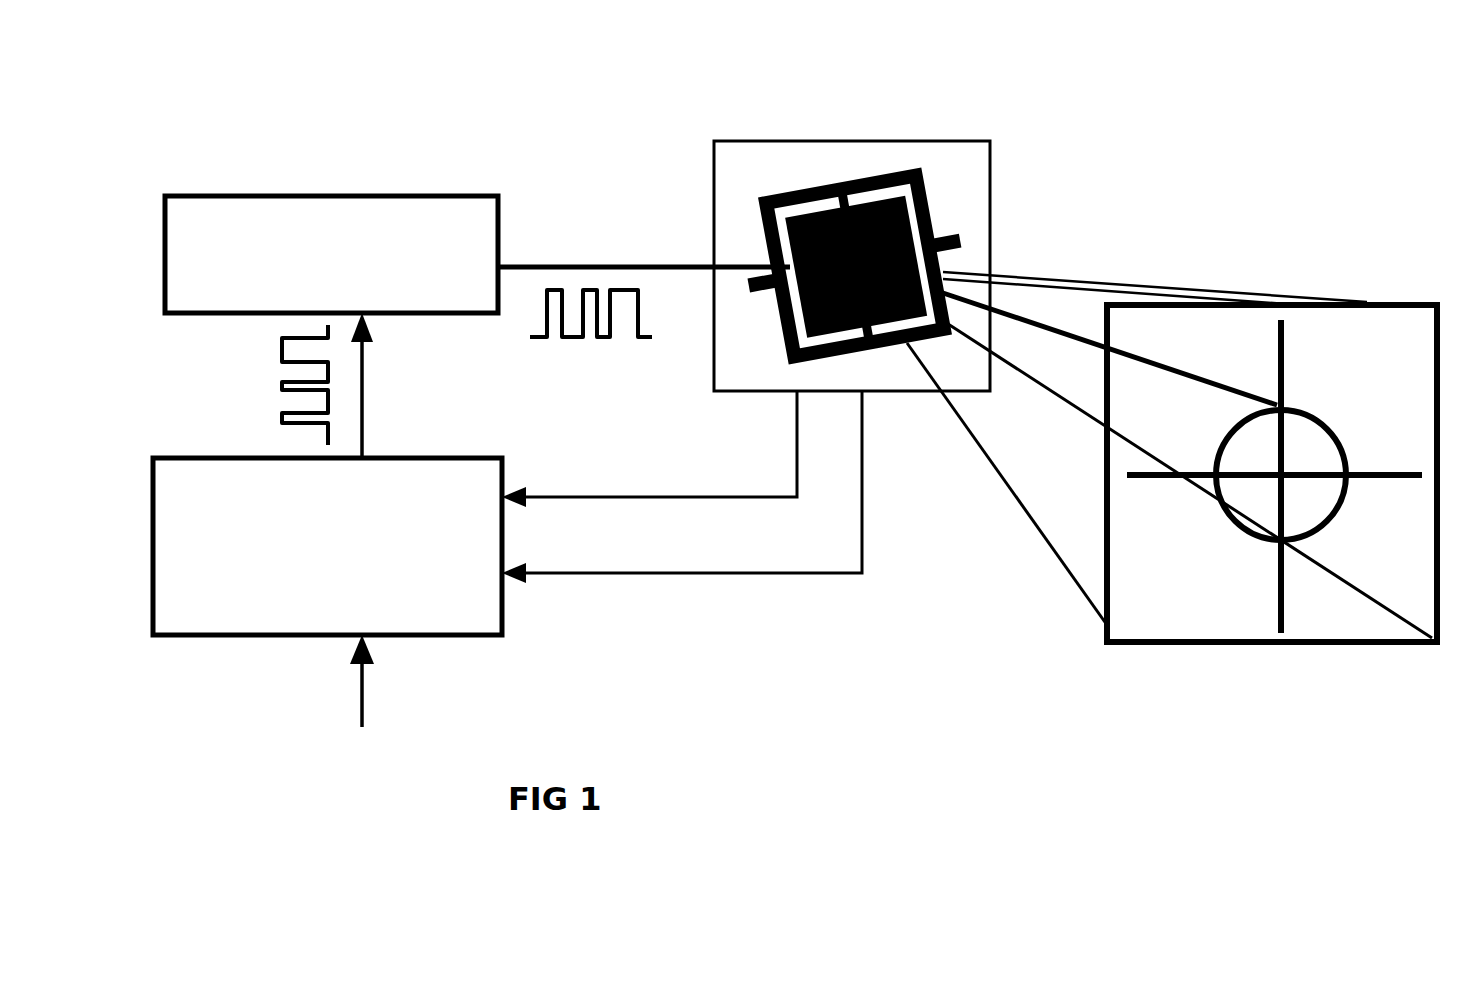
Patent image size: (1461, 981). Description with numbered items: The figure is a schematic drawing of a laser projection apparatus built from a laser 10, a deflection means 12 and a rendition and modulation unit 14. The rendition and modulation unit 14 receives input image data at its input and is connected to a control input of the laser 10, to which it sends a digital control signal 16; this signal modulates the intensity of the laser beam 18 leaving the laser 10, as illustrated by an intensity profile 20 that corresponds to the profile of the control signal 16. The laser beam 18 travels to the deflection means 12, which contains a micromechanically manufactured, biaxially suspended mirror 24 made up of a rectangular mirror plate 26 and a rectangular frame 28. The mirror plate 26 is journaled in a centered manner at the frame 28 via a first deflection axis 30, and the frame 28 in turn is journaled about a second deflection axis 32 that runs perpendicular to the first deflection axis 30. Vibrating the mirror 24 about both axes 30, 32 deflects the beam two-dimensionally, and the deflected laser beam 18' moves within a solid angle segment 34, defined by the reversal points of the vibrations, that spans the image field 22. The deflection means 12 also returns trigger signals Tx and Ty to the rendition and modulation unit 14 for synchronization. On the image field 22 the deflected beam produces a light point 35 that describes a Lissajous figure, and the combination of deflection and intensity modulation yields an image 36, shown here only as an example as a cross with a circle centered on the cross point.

The laser 10 is at (265, 196).
The deflection means 12 is at (735, 141).
The rendition and modulation unit 14 is at (170, 458).
The digital control signal 16 is at (282, 340).
The laser beam 18 is at (644, 228).
The deflected laser beam 18' is at (1153, 303).
The intensity profile 20 is at (570, 340).
The image field 22 is at (1367, 302).
The biaxially suspended mirror 24 is at (862, 162).
The mirror plate 26 is at (908, 223).
The frame 28 is at (1005, 163).
The first deflection axis 30 is at (876, 330).
The second deflection axis 32 is at (950, 255).
The solid angle segment 34 is at (1013, 507).
The light point 35 is at (1288, 405).
The image 36 is at (1328, 525).